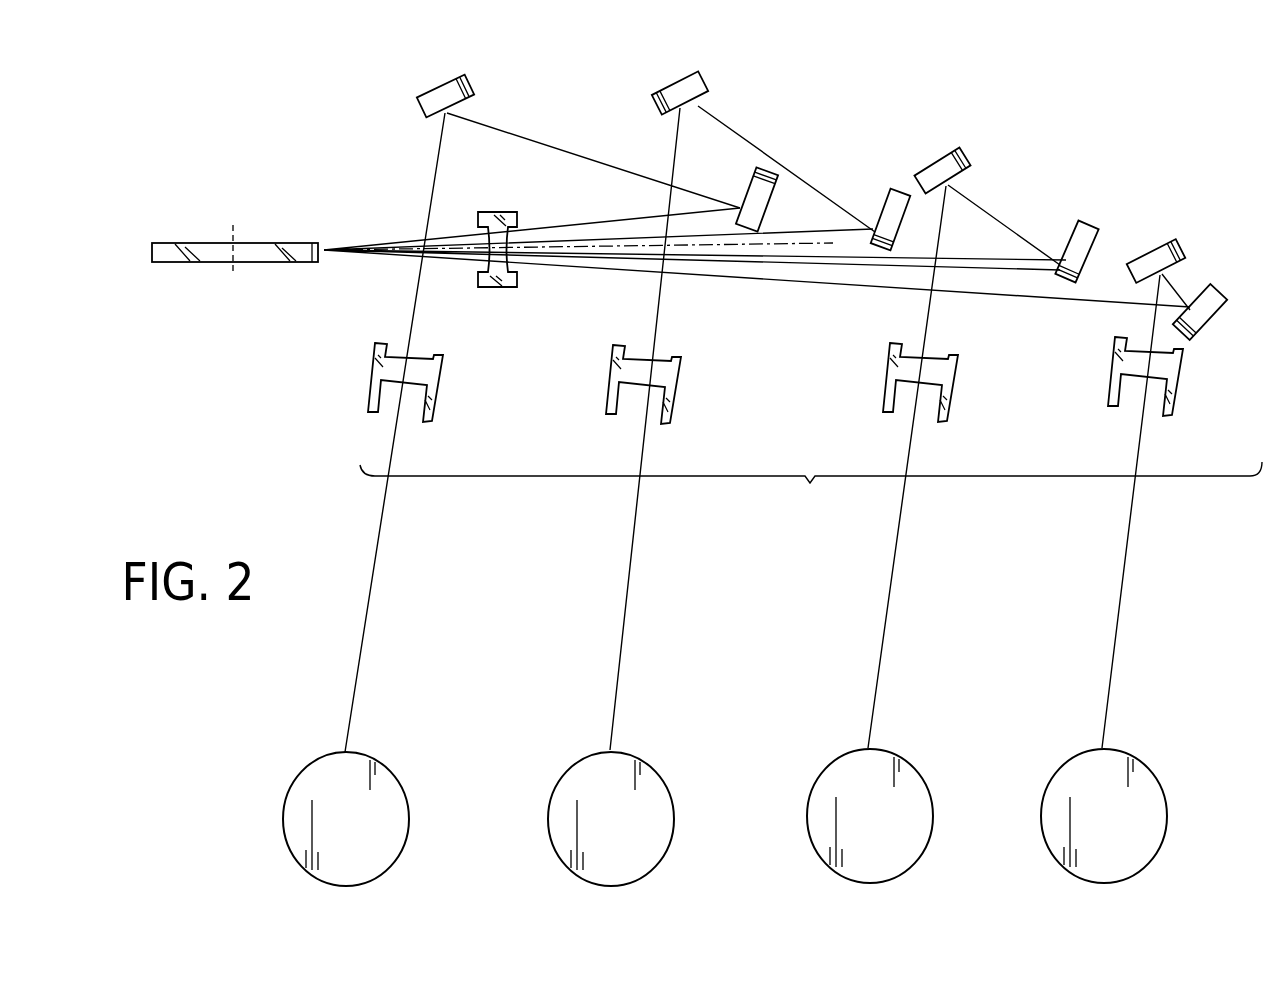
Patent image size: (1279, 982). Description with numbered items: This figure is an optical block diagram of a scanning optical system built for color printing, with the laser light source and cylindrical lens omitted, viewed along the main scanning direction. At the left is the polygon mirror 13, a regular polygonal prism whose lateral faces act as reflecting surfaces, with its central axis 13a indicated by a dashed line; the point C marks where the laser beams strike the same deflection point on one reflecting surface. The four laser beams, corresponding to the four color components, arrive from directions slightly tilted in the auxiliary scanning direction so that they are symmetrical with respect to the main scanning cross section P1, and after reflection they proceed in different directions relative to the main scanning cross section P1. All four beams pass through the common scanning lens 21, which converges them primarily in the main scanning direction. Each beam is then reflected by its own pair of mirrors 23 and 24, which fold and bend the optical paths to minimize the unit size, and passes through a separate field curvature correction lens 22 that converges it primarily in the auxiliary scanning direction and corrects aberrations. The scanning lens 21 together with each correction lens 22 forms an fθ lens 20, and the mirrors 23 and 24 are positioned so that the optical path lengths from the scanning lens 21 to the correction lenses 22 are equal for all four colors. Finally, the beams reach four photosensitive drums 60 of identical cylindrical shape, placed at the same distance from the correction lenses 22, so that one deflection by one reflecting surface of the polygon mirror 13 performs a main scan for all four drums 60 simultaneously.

The polygon mirror 13 is at (232, 220).
The central axis 13a is at (221, 210).
The light emission point C is at (327, 247).
The main scanning cross section P1 is at (798, 247).
The scanning lens 21 is at (498, 282).
The mirror 24 is at (472, 88).
The mirror 23 is at (752, 195).
The field curvature correction lens 22 is at (449, 404).
The fθ lens 20 is at (811, 488).
The photosensitive drum 60 is at (319, 755).